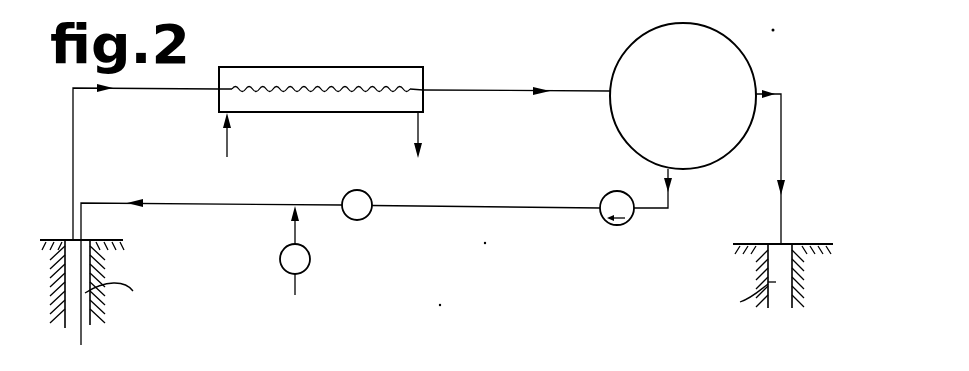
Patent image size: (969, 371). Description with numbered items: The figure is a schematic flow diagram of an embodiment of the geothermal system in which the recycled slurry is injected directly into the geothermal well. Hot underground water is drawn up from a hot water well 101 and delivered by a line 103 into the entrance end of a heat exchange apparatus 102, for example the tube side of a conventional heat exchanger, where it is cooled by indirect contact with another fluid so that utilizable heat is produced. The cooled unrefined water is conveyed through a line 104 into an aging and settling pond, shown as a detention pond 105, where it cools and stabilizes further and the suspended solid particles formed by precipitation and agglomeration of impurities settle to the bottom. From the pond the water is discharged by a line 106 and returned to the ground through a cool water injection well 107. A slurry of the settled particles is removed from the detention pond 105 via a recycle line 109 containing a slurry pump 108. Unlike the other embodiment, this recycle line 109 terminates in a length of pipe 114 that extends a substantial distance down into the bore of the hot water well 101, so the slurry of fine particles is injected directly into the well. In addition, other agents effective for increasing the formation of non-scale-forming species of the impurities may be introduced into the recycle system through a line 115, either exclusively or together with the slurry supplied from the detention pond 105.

The hot water well 101 is at (68, 240).
The heat exchange apparatus 102 is at (265, 67).
The line 103 is at (127, 89).
The line 104 is at (465, 90).
The settling pond 105 is at (618, 68).
The line 106 is at (781, 158).
The water injection well 107 is at (772, 243).
The slurry pump 108 is at (605, 196).
The recycle line 109 is at (423, 208).
The length of pipe 114 is at (85, 258).
The line 115 is at (295, 280).